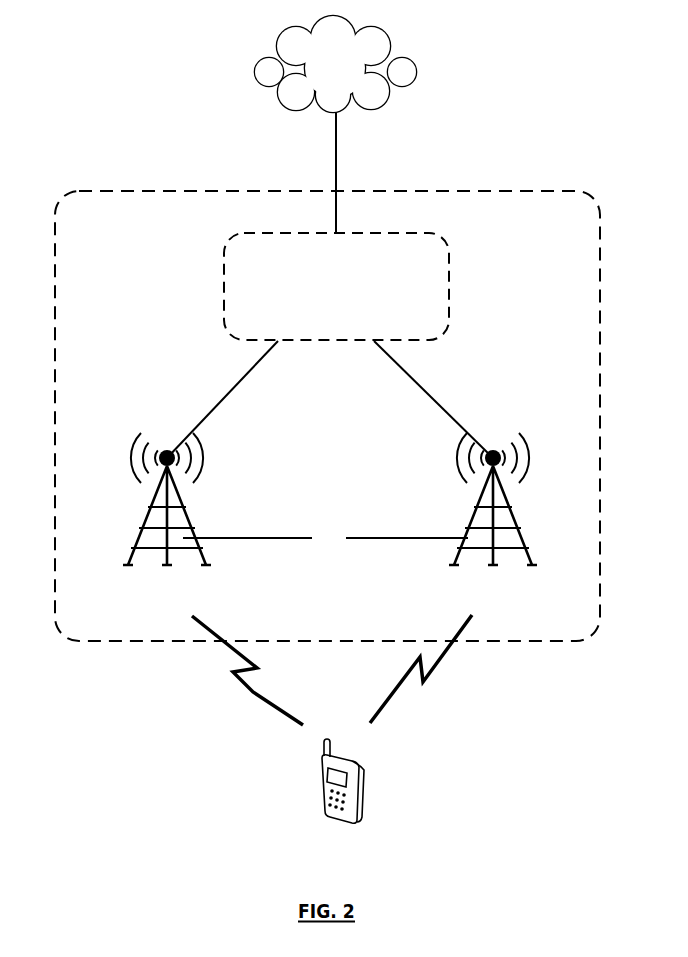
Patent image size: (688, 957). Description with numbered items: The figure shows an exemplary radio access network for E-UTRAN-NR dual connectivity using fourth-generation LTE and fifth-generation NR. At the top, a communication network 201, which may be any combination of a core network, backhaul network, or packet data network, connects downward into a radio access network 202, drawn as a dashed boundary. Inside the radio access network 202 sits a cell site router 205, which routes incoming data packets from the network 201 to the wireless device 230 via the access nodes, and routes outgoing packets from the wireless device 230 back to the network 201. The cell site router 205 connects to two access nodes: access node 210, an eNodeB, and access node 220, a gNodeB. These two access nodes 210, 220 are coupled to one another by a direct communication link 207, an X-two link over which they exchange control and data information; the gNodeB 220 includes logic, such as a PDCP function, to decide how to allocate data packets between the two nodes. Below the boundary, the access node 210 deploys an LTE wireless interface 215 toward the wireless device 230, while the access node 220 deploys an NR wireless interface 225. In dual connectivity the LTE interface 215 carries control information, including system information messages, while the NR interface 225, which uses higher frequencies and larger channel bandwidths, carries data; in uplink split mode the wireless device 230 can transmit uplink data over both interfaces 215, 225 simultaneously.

The communication network 201 is at (350, 76).
The radio access network 202 is at (130, 191).
The cell site router 205 is at (353, 311).
The direct communication link 207 is at (395, 538).
The access node 210 is at (146, 528).
The wireless interface 215 is at (246, 690).
The access node 220 is at (512, 530).
The second wireless interface 225 is at (426, 678).
The wireless device 230 is at (325, 818).